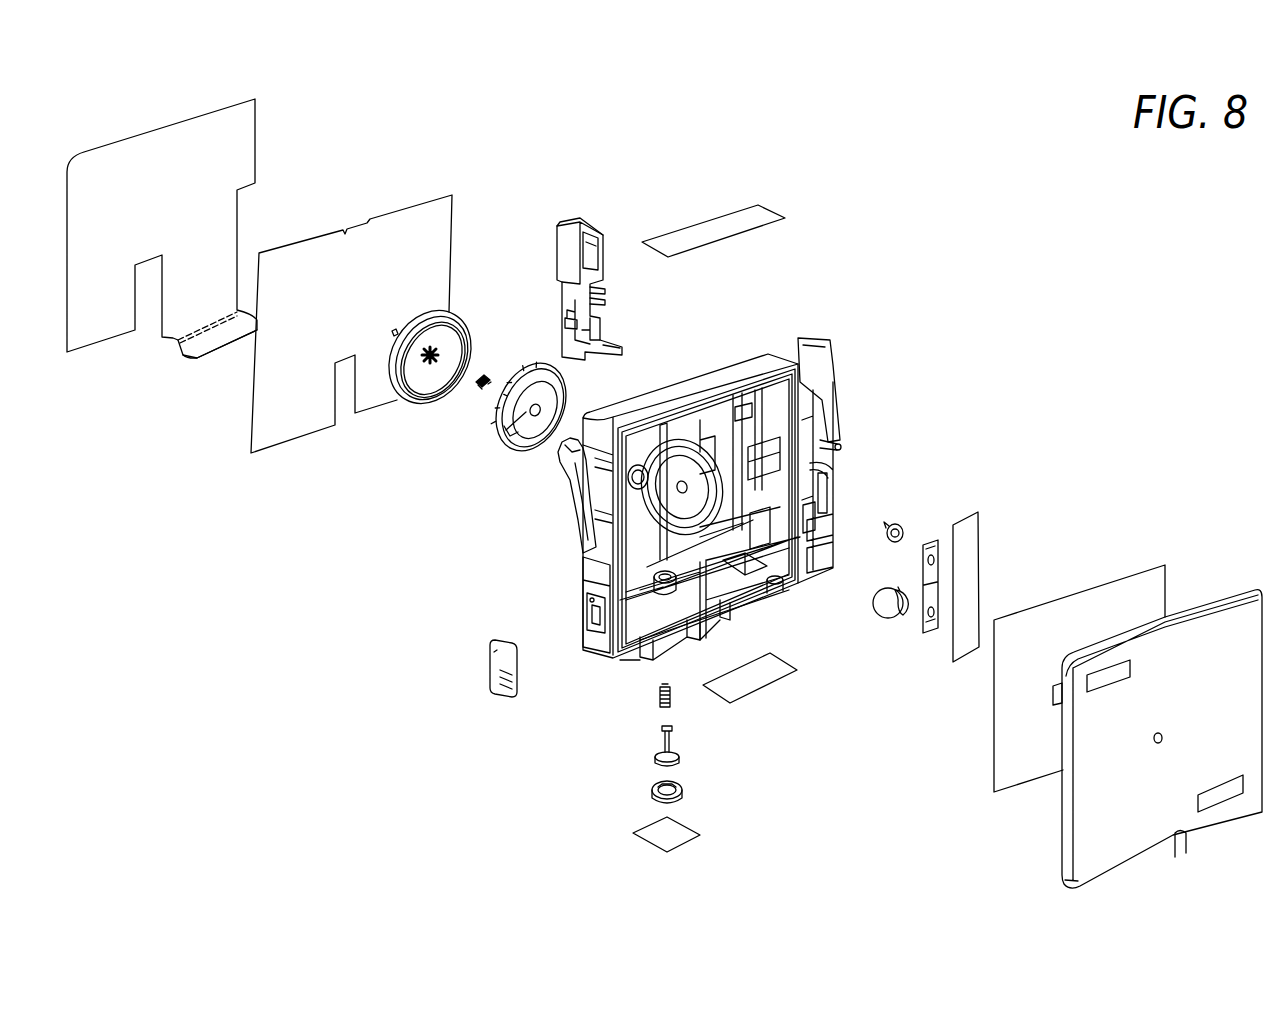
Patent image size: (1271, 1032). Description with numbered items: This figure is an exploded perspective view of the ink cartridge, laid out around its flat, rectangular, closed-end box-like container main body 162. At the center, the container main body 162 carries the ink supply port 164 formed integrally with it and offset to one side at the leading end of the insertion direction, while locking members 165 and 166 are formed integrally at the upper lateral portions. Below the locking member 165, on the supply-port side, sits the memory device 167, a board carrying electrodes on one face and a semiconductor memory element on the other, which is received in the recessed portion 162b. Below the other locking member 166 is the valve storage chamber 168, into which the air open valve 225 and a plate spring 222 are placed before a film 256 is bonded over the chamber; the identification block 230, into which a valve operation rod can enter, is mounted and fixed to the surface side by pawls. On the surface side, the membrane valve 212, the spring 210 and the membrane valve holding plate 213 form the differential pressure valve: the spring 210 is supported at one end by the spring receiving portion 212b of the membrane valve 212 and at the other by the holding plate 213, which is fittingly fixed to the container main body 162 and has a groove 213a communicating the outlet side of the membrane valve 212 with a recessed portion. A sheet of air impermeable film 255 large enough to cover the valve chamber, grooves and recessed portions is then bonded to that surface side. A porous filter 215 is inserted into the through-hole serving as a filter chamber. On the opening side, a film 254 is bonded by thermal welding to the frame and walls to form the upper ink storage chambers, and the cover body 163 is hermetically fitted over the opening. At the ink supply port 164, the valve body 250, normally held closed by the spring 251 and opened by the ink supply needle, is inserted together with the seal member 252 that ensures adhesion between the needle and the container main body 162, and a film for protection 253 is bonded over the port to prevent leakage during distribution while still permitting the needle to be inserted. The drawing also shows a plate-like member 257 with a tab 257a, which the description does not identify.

The container main body 162 is at (767, 353).
The recessed portion 162b is at (597, 620).
The cover body 163 is at (1130, 837).
The ink supply port 164 is at (673, 645).
The locking member 165 is at (567, 472).
The locking member 166 is at (820, 338).
The memory device 167 is at (493, 655).
The valve storage chamber 168 is at (808, 518).
The spring 210 is at (482, 375).
The membrane valve 212 is at (565, 403).
The spring receiving portion 212b is at (513, 433).
The membrane valve holding plate 213 is at (457, 322).
The groove 213a is at (423, 363).
The filter 215 is at (880, 617).
The plate spring 222 is at (922, 634).
The air open valve 225 is at (898, 527).
The identification block 230 is at (582, 217).
The valve body 250 is at (655, 748).
The spring 251 is at (660, 700).
The seal member 252 is at (682, 790).
The film for protection 253 is at (690, 837).
The film 254 is at (1155, 597).
The air impermeable film 255 is at (423, 217).
The film 256 is at (972, 578).
The front plate 257 is at (248, 127).
The front plate tab 257a is at (183, 353).